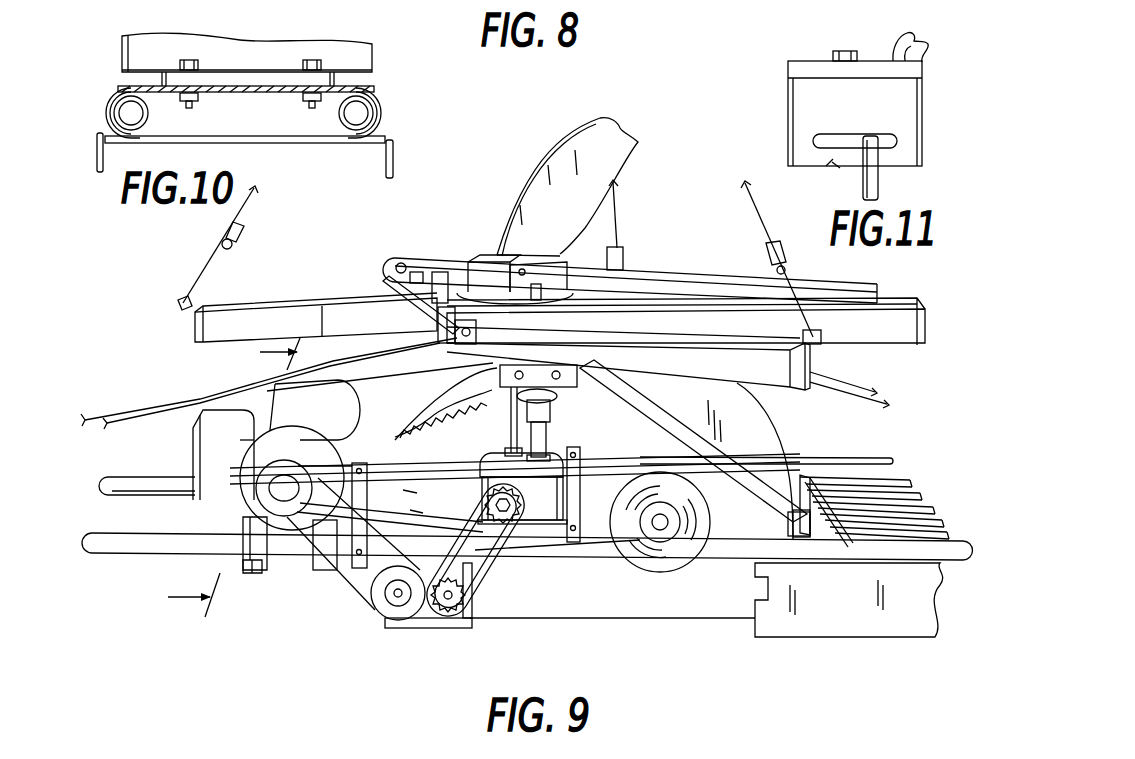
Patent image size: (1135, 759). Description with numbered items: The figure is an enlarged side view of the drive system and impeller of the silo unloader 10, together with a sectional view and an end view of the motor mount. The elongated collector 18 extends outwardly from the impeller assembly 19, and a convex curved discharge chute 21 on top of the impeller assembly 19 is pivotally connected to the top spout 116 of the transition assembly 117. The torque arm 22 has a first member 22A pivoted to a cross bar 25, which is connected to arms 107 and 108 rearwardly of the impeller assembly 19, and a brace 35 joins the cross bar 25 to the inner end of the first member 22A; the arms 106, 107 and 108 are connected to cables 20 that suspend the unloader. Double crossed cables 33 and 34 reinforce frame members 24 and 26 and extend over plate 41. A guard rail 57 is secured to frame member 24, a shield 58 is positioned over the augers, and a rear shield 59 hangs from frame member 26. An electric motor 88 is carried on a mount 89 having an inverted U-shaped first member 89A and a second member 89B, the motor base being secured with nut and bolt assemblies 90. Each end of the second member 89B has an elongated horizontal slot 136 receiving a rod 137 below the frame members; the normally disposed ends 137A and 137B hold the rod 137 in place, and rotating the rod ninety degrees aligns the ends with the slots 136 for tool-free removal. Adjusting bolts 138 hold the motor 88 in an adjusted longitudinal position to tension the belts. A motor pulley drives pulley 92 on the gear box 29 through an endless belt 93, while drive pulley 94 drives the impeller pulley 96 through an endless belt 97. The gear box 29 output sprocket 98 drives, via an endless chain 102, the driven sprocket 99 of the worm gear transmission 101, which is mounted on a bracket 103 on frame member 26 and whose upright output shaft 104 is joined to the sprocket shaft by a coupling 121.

In FIG. 9, the silo unloader 10 is at (234, 477).
In FIG. 9, the collector 18 is at (933, 473).
In FIG. 9, the impeller assembly 19 is at (786, 436).
In FIG. 9, the cables 20 is at (614, 179).
In FIG. 9, the discharge chute 21 is at (563, 146).
In FIG. 9, the torque arm 22 is at (910, 316).
In FIG. 9, the first member 22A is at (727, 330).
In FIG. 10, the frame member 24 is at (150, 118).
In FIG. 9, the frame member 24 is at (149, 482).
In FIG. 9, the cross bar 25 is at (390, 288).
In FIG. 9, the frame member 26 is at (127, 548).
In FIG. 9, the gear box 29 is at (460, 622).
In FIG. 9, the cable 33 is at (380, 383).
In FIG. 9, the cable 34 is at (361, 358).
In FIG. 9, the brace 35 is at (732, 286).
In FIG. 9, the plate 41 is at (596, 379).
In FIG. 9, the guard rail 57 is at (857, 460).
In FIG. 9, the shield 58 is at (923, 518).
In FIG. 9, the rear shield 59 is at (867, 623).
In FIG. 10, the electric motor 88 is at (360, 56).
In FIG. 11, the electric motor 88 is at (915, 58).
In FIG. 9, the electric motor 88 is at (258, 410).
In FIG. 9, the mount 89 is at (250, 552).
In FIG. 9, the first member 89A is at (320, 568).
In FIG. 10, the second member 89B is at (380, 104).
In FIG. 11, the second member 89B is at (922, 104).
In FIG. 9, the second member 89B is at (247, 575).
In FIG. 10, the nut and bolt assemblies 90 is at (287, 62).
In FIG. 11, the nut and bolt assemblies 90 is at (833, 55).
In FIG. 9, the pulley 92 is at (402, 614).
In FIG. 9, the endless belt 93 is at (347, 587).
In FIG. 9, the drive pulley 94 is at (275, 486).
In FIG. 9, the impeller pulley 96 is at (662, 563).
In FIG. 9, the endless belt 97 is at (602, 556).
In FIG. 9, the sprocket 98 is at (443, 615).
In FIG. 9, the driven sprocket 99 is at (510, 530).
In FIG. 9, the worm gear transmission 101 is at (537, 500).
In FIG. 9, the endless chain 102 is at (482, 588).
In FIG. 9, the bracket 103 is at (570, 542).
In FIG. 9, the output shaft 104 is at (542, 417).
In FIG. 9, the arm 106 is at (625, 263).
In FIG. 9, the arm 107 is at (240, 325).
In FIG. 9, the arm 108 is at (748, 370).
In FIG. 9, the top spout 116 is at (523, 258).
In FIG. 9, the transition assembly 117 is at (488, 253).
In FIG. 9, the coupling 121 is at (512, 400).
In FIG. 11, the slot 136 is at (832, 134).
In FIG. 10, the rod 137 is at (277, 140).
In FIG. 10, the end 137A is at (98, 162).
In FIG. 10, the end 137B is at (393, 166).
In FIG. 11, the end 137B is at (880, 190).
In FIG. 9, the end 137B is at (256, 578).
In FIG. 9, the adjusting bolts 138 is at (412, 510).